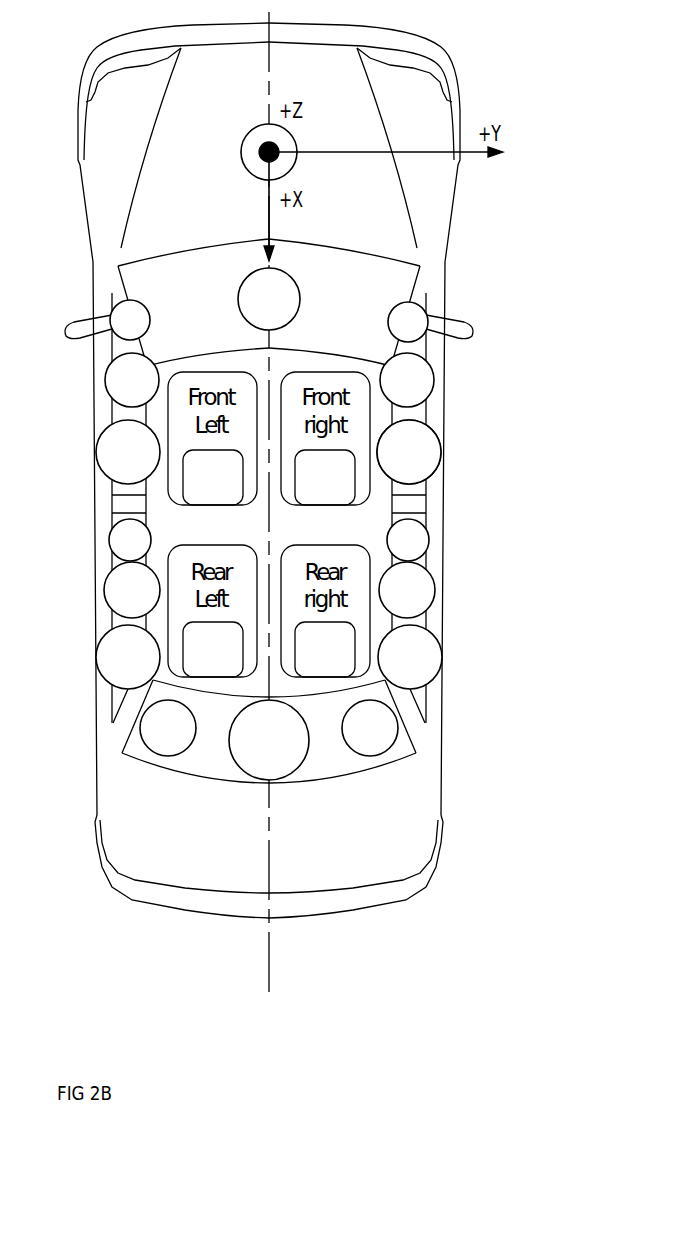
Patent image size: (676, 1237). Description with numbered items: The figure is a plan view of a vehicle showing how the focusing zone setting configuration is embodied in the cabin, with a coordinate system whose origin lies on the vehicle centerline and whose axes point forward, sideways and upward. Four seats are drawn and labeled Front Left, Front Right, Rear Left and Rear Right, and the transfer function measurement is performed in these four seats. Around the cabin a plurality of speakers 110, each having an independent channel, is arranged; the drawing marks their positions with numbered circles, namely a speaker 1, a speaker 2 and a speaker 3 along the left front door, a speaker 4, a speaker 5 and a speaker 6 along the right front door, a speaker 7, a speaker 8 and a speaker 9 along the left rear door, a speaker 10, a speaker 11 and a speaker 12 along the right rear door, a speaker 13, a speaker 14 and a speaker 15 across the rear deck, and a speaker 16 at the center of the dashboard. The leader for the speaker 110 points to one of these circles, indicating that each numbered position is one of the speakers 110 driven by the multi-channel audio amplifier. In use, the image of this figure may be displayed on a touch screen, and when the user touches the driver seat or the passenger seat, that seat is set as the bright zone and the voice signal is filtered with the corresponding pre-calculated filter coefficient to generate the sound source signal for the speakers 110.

The speaker position 1 is at (130, 320).
The speaker position 2 is at (132, 380).
The speaker position 3 is at (128, 452).
The speaker position 4 is at (408, 322).
The speaker position 5 is at (407, 380).
The speaker position 6 is at (409, 452).
The speaker position 7 is at (130, 540).
The speaker position 8 is at (132, 590).
The speaker position 9 is at (128, 657).
The speaker position 10 is at (408, 540).
The speaker position 11 is at (407, 590).
The speaker position 12 is at (410, 657).
The speaker position 13 is at (168, 728).
The speaker position 14 is at (370, 728).
The speaker position 15 is at (269, 740).
The speaker position 16 is at (269, 299).
The speaker 110 is at (427, 450).